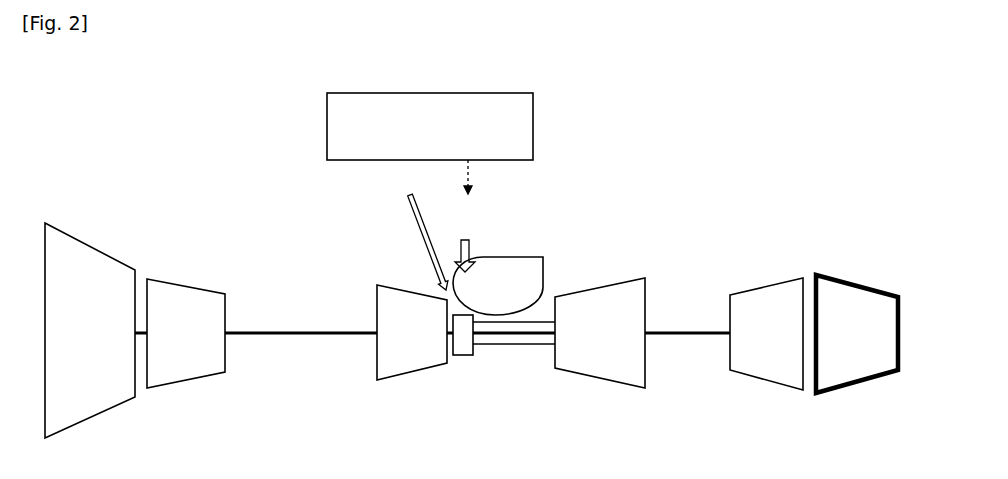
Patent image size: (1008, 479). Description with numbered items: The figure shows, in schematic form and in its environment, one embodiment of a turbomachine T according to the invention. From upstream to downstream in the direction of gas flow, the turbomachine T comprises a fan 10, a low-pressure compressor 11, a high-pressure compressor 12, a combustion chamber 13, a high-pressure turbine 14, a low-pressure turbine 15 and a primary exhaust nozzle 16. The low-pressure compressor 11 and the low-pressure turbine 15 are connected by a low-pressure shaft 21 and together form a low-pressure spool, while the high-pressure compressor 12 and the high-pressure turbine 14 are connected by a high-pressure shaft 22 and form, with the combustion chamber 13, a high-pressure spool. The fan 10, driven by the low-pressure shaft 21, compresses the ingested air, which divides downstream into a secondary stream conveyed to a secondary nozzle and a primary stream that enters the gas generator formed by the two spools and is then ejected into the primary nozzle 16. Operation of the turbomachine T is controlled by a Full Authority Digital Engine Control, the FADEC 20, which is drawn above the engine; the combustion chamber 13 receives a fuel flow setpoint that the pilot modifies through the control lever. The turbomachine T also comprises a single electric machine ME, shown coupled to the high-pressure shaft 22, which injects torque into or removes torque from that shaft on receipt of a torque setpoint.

The fan 10 is at (90, 246).
The low-pressure compressor 11 is at (178, 286).
The high-pressure compressor 12 is at (385, 382).
The combustion chamber 13 is at (497, 257).
The high-pressure turbine 14 is at (618, 282).
The low-pressure turbine 15 is at (770, 285).
The primary exhaust nozzle 16 is at (852, 284).
The FADEC 20 is at (430, 191).
The low-pressure shaft 21 is at (328, 335).
The high-pressure shaft 22 is at (520, 346).
The electric machine ME is at (453, 356).
The turbomachine T is at (297, 236).